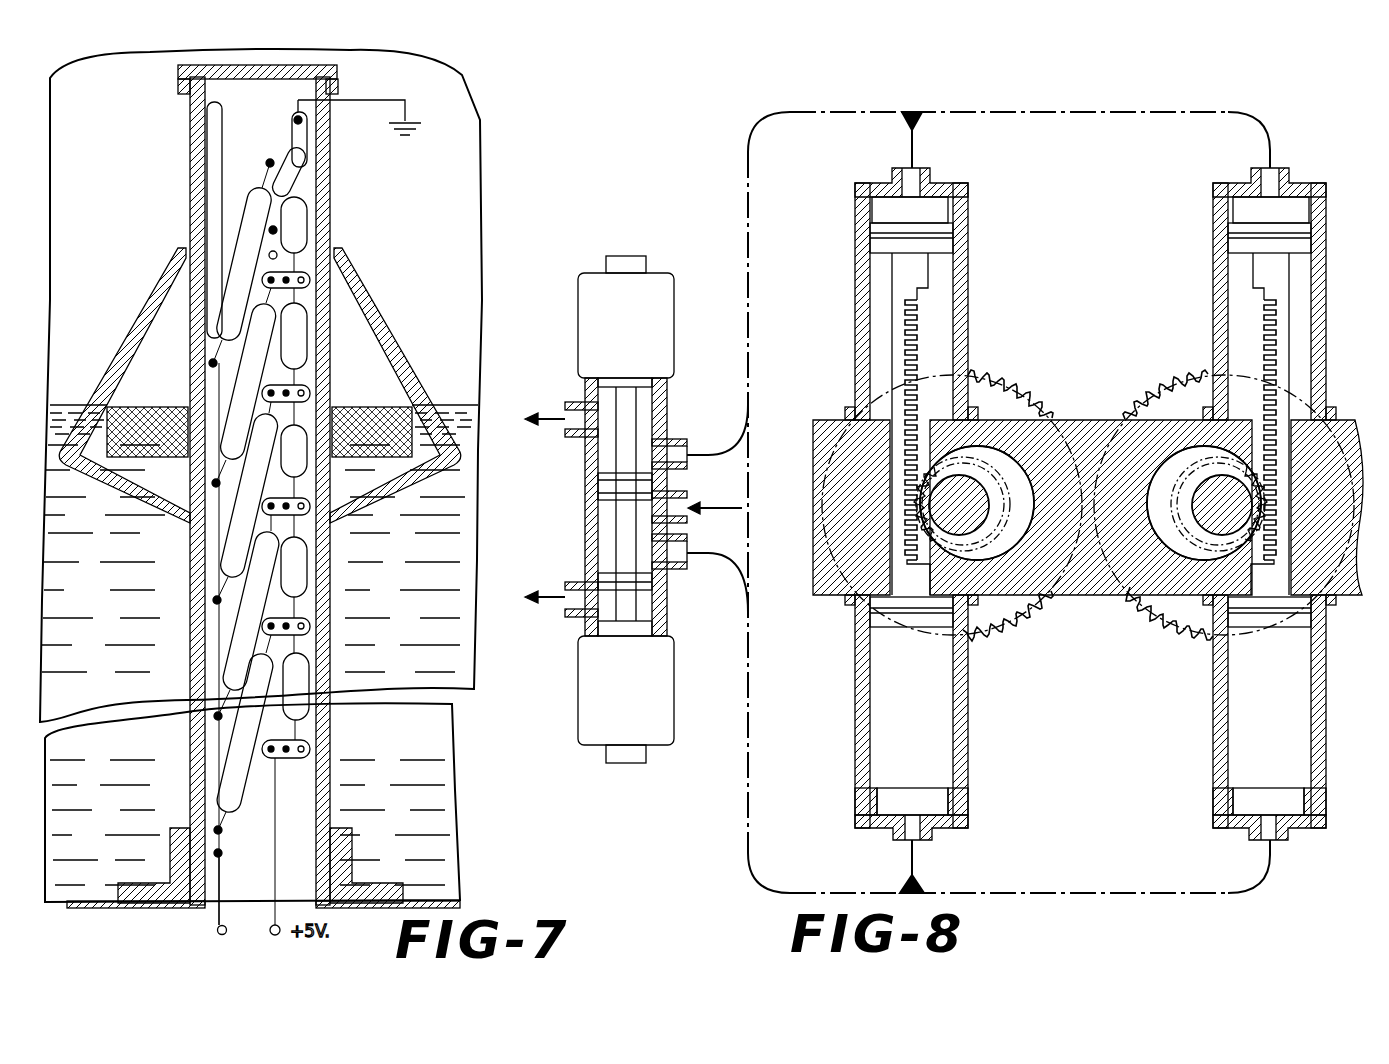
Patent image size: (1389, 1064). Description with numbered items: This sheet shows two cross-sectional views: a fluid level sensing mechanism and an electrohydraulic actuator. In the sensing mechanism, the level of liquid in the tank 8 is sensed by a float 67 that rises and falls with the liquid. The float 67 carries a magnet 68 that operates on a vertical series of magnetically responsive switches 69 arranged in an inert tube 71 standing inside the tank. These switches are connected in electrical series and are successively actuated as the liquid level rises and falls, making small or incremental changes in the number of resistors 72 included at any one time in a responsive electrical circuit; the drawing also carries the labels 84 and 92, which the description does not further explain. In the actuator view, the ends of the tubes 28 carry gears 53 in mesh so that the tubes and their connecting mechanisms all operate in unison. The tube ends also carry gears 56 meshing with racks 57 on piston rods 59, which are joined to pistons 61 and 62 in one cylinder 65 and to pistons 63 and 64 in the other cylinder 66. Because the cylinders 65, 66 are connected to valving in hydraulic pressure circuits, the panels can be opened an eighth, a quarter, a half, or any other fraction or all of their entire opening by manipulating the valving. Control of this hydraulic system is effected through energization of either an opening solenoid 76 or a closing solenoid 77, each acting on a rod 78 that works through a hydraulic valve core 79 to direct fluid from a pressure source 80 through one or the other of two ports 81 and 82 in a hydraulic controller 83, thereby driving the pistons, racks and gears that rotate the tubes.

In FIG. 7, the tank 8 is at (438, 880).
In FIG. 7, the float 67 is at (380, 288).
In FIG. 7, the magnet 68 is at (128, 460).
In FIG. 7, the magnetically responsive switches 69 is at (250, 207).
In FIG. 7, the inert tube 71 is at (321, 128).
In FIG. 7, the resistors 72 is at (299, 218).
In FIG. 7, the output terminal 84 is at (212, 930).
In FIG. 7, the ground connection 92 is at (415, 137).
In FIG. 8, the tubes 28 is at (968, 500).
In FIG. 8, the gears 53 is at (1175, 380).
In FIG. 8, the gears 56 is at (995, 520).
In FIG. 8, the racks 57 is at (914, 355).
In FIG. 8, the piston rods 59 is at (892, 268).
In FIG. 8, the piston 61 is at (946, 232).
In FIG. 8, the piston 62 is at (870, 612).
In FIG. 8, the piston 63 is at (1228, 236).
In FIG. 8, the piston 64 is at (1224, 625).
In FIG. 8, the cylinder 65 is at (962, 295).
In FIG. 8, the cylinder 66 is at (1218, 290).
In FIG. 8, the opening solenoid 76 is at (636, 345).
In FIG. 8, the closing solenoid 77 is at (636, 707).
In FIG. 8, the rod 78 is at (620, 613).
In FIG. 8, the hydraulic valve core 79 is at (598, 478).
In FIG. 8, the pressure source 80 is at (708, 505).
In FIG. 8, the port 81 is at (673, 455).
In FIG. 8, the port 82 is at (680, 563).
In FIG. 8, the hydraulic controller 83 is at (578, 518).